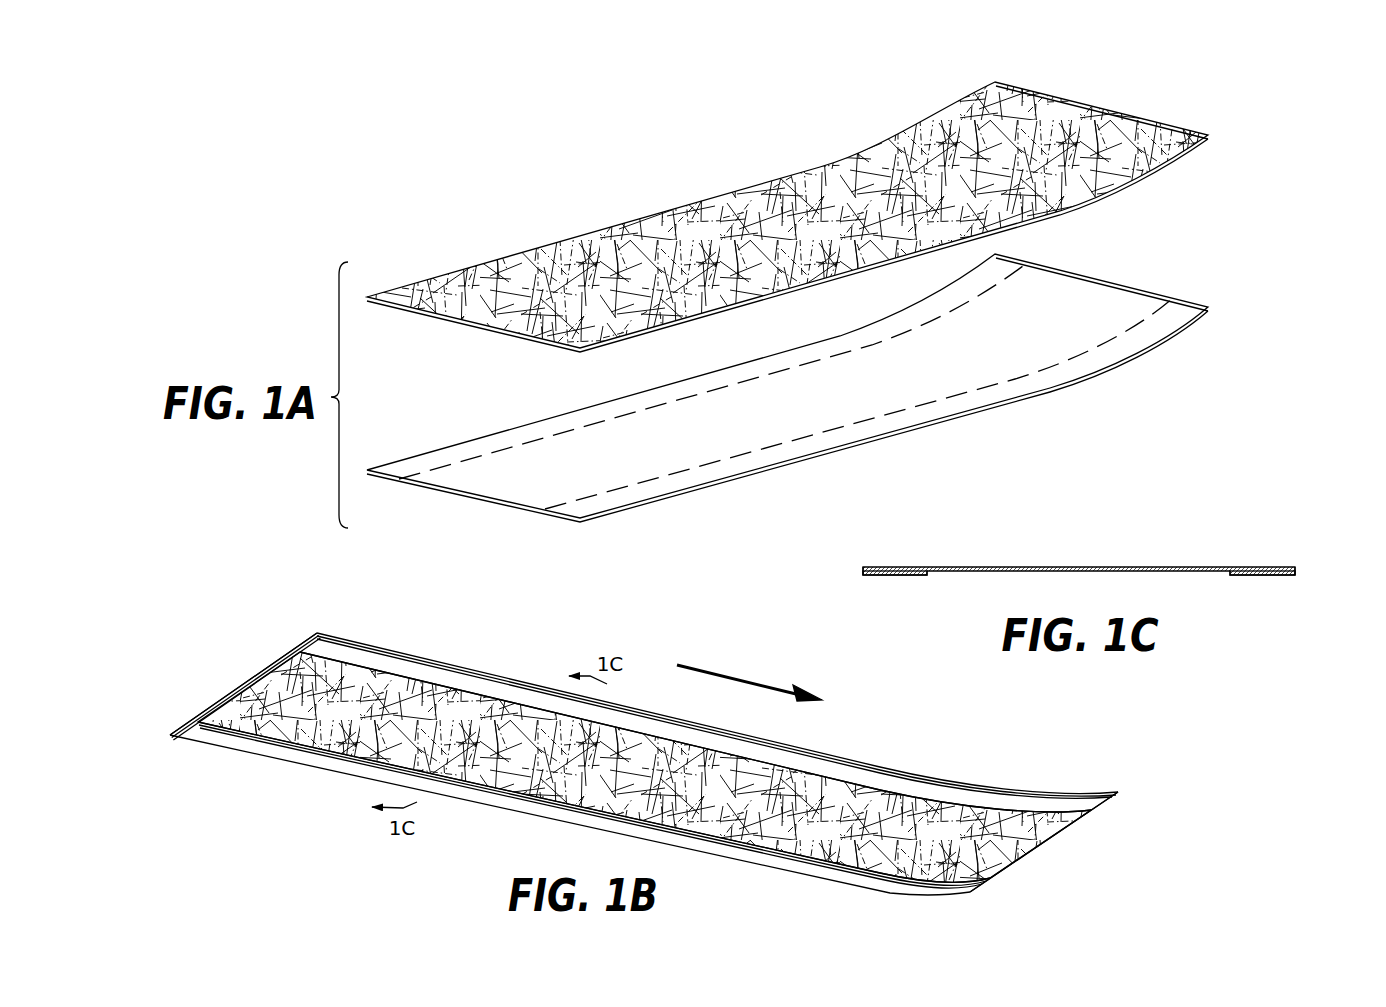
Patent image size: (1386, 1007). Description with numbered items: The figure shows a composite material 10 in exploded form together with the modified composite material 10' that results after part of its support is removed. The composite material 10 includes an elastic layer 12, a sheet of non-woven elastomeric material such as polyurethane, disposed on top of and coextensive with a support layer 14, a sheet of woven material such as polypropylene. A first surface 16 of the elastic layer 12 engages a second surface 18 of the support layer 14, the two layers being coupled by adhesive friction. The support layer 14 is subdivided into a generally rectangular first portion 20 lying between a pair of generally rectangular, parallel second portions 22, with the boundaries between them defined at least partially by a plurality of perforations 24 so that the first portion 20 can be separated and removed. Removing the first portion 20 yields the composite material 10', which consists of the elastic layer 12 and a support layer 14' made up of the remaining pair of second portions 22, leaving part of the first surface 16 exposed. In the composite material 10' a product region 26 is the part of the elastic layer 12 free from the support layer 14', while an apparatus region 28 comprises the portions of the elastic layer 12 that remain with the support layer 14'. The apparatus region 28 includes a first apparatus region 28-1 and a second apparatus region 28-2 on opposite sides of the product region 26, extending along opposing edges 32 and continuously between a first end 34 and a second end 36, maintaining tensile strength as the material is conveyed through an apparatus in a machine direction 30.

In FIG. 1A, the composite material 10 is at (817, 283).
In FIG. 1B, the composite material 10' is at (631, 731).
In FIG. 1C, the composite material 10' is at (1124, 515).
In FIG. 1A, the elastic layer 12 is at (1093, 147).
In FIG. 1B, the elastic layer 12 is at (1008, 857).
In FIG. 1C, the elastic layer 12 is at (1157, 567).
In FIG. 1A, the support layer 14 is at (787, 384).
In FIG. 1B, the support layer 14' is at (582, 835).
In FIG. 1C, the support layer 14' is at (1093, 596).
In FIG. 1A, the first surface 16 is at (1150, 190).
In FIG. 1B, the first surface 16 is at (656, 796).
In FIG. 1C, the first surface 16 is at (997, 575).
In FIG. 1A, the second surface 18 is at (732, 430).
In FIG. 1C, the second surface 18 is at (893, 564).
In FIG. 1A, the first portion 20 is at (465, 477).
In FIG. 1A, the second portion 22 is at (580, 502).
In FIG. 1A, the perforations 24 is at (535, 437).
In FIG. 1B, the product region 26 is at (828, 839).
In FIG. 1C, the product region 26 is at (1063, 564).
In FIG. 1B, the apparatus region 28 is at (916, 776).
In FIG. 1C, the apparatus region 28 is at (1257, 564).
In FIG. 1B, the first apparatus region 28-1 is at (327, 654).
In FIG. 1C, the first apparatus region 28-1 is at (892, 578).
In FIG. 1B, the second apparatus region 28-2 is at (223, 743).
In FIG. 1C, the second apparatus region 28-2 is at (1257, 578).
In FIG. 1B, the machine direction 30 is at (730, 675).
In FIG. 1B, the edges 32 is at (803, 747).
In FIG. 1C, the edges 32 is at (863, 568).
In FIG. 1B, the first end 34 is at (1079, 837).
In FIG. 1B, the second end 36 is at (258, 642).